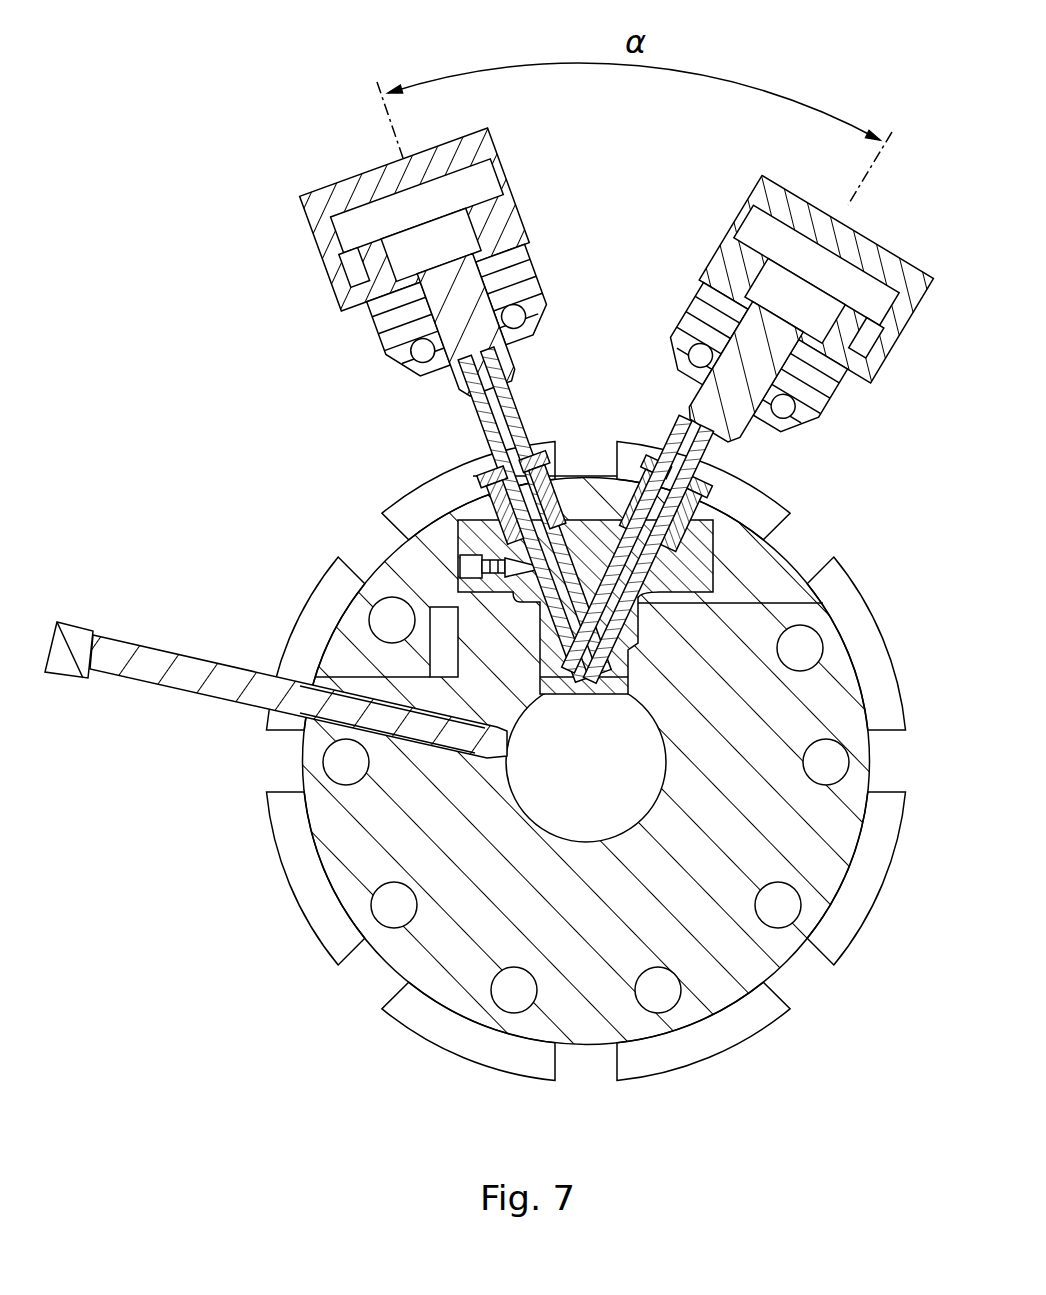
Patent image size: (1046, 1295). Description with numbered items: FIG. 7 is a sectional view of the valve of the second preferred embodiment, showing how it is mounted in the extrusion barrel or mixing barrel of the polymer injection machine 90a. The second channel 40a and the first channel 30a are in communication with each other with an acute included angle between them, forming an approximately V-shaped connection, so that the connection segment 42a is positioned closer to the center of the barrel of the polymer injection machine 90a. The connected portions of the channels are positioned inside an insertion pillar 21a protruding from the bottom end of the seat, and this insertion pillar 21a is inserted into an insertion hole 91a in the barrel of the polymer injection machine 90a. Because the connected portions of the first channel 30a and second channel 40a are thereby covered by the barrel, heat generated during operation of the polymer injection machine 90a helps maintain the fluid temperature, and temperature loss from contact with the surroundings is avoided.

The polymer injection machine 90a is at (440, 930).
The insertion pillar 21a is at (553, 662).
The insertion hole 91a is at (543, 690).
The first channel 30a is at (600, 636).
The second channel 40a is at (650, 562).
The connection segment 42a is at (638, 640).